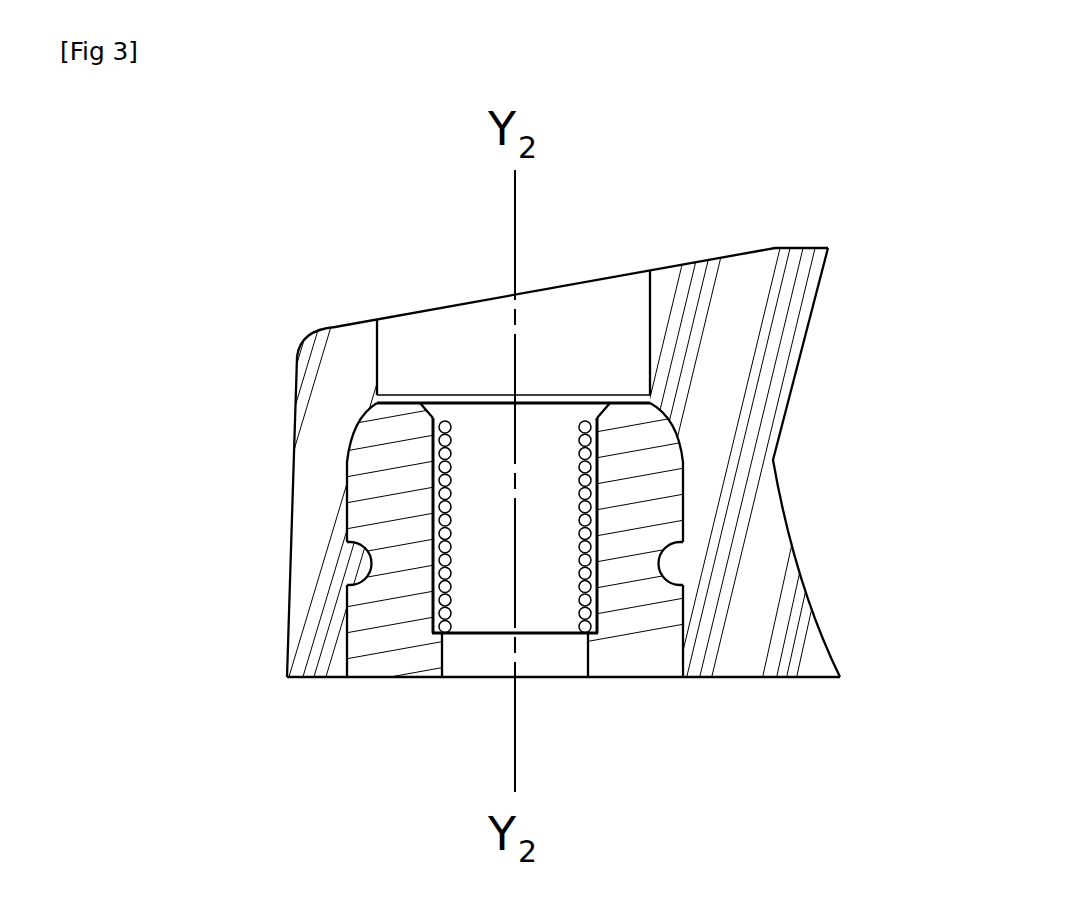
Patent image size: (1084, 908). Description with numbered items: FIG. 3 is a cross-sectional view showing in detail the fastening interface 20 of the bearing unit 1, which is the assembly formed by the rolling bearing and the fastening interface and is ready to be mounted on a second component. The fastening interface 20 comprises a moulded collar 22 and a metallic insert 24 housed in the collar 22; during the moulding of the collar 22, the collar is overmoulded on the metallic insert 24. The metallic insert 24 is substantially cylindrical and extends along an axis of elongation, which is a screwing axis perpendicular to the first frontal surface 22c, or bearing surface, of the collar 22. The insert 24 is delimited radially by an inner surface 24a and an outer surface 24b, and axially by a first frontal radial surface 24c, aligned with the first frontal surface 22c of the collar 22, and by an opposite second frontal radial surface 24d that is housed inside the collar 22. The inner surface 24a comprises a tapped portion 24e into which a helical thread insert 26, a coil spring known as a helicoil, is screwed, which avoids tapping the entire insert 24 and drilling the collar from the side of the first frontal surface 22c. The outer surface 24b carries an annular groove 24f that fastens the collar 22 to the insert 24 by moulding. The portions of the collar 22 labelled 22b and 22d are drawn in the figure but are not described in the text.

The bearing unit 1 is at (216, 262).
The fastening interface 20 is at (795, 186).
The collar 22 is at (780, 368).
The side wall of housing 22b is at (292, 520).
The first frontal surface 22c is at (312, 677).
The top surface of housing 22d is at (350, 322).
The metallic insert 24 is at (378, 638).
The inner surface 24a is at (575, 655).
The outer surface 24b is at (683, 485).
The first frontal radial surface 24c is at (612, 677).
The second frontal radial surface 24d is at (405, 403).
The tapped portion 24e is at (600, 585).
The annular groove 24f is at (660, 562).
The helical thread insert 26 is at (445, 587).